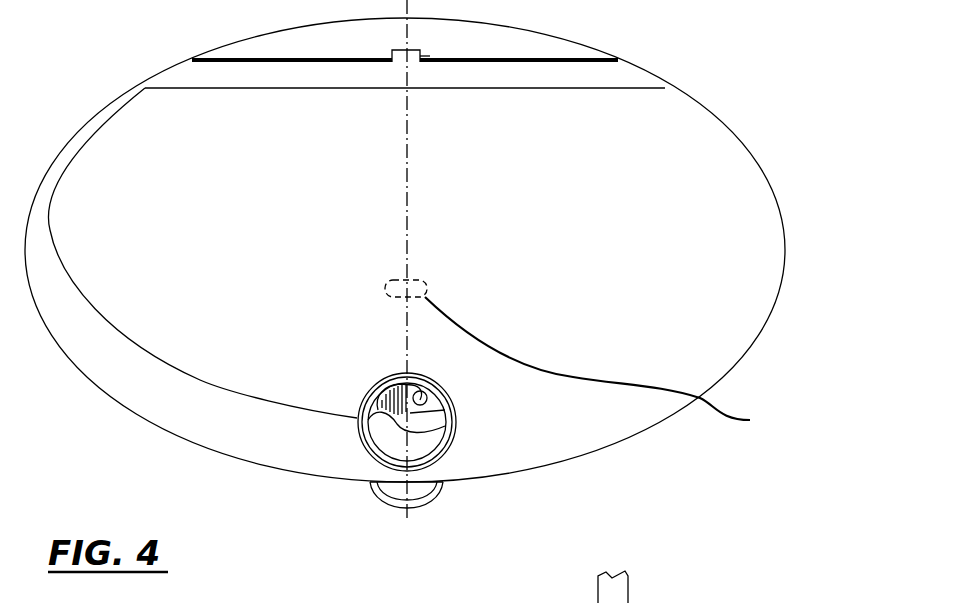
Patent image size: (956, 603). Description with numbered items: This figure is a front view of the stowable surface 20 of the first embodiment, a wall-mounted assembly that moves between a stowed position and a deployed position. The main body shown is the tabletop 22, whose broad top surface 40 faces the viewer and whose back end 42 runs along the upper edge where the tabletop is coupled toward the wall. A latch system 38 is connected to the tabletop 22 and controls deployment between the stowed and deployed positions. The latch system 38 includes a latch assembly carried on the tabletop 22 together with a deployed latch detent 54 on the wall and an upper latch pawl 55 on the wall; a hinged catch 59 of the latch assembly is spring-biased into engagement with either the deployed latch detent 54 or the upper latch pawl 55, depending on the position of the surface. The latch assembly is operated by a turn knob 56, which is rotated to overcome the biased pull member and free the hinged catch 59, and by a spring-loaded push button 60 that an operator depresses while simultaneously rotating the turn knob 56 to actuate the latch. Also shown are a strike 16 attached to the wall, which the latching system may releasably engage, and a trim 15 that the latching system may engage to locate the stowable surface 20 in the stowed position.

The trim 15 is at (553, 48).
The strike 16 is at (398, 493).
The stowable surface 20 is at (146, 461).
The tabletop 22 is at (753, 343).
The latch system 38 is at (345, 438).
The top surface 40 is at (713, 157).
The back end 42 is at (310, 77).
The deployed latch detent 54 is at (586, 356).
The upper latch pawl 55 is at (378, 50).
The turn knob 56 is at (437, 462).
The hinged catch 59 is at (420, 52).
The spring-loaded push button 60 is at (420, 398).